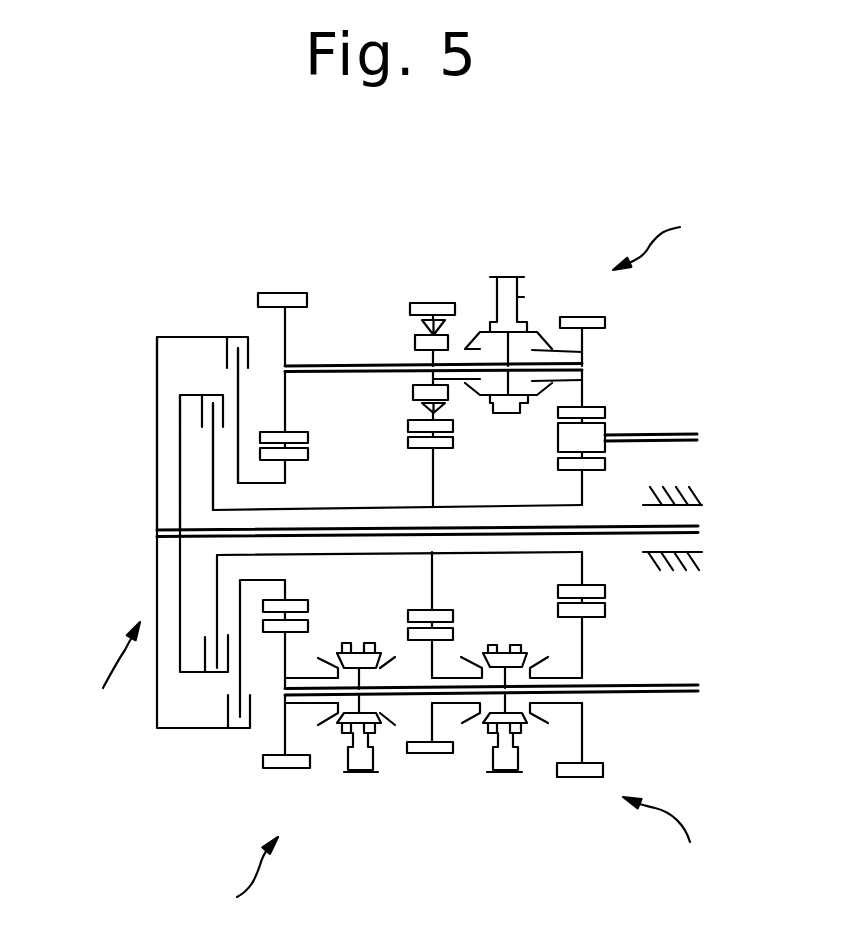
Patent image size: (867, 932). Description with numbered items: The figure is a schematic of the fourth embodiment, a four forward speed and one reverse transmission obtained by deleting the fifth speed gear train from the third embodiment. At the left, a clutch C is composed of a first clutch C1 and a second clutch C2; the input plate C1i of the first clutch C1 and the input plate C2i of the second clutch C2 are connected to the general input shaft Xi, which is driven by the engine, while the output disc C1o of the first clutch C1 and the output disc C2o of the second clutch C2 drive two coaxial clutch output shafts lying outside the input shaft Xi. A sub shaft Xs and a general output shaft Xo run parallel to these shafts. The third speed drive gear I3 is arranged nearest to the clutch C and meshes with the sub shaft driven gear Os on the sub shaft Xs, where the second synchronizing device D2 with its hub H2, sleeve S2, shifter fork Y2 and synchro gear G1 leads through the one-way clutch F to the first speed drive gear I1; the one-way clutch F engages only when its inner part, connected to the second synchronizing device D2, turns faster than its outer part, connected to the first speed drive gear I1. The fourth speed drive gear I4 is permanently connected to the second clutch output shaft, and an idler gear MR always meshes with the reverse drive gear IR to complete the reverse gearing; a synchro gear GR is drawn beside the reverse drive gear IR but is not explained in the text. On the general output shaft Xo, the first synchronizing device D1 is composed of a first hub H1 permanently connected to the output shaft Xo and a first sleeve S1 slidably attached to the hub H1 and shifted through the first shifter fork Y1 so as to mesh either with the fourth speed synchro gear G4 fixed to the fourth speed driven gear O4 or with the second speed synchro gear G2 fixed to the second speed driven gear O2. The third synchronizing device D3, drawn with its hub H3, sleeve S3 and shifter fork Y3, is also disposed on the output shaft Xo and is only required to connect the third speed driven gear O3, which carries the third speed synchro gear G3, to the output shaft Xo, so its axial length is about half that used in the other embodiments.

The clutch C is at (111, 665).
The first clutch C1 is at (218, 337).
The second clutch C2 is at (195, 395).
The input plate of the first clutch C1i is at (157, 430).
The output disc of the first clutch C1o is at (240, 445).
The input plate of the second clutch C2i is at (180, 413).
The output disc of the second clutch C2o is at (215, 473).
The sub shaft driven gear Os is at (287, 293).
The first speed drive gear I1 is at (435, 303).
The third speed drive gear I3 is at (308, 451).
The fourth speed drive gear I4 is at (447, 449).
The reverse drive gear IR is at (583, 317).
The one-way clutch F is at (417, 319).
The first speed synchro gear G1 is at (467, 346).
The carrier GR is at (537, 332).
The planetary pinion Y2 is at (523, 277).
The second synchronizing device D2 is at (668, 240).
The sub shaft Xs is at (584, 368).
The general input shaft Xi is at (693, 527).
The general output shaft Xo is at (690, 684).
The idler gear MR is at (605, 430).
The second sleeve S2 is at (495, 413).
The second hub H2 is at (508, 379).
The first sleeve S1 is at (478, 653).
The first hub H1 is at (557, 650).
The sun gear S3 is at (350, 643).
The ring gear H3 is at (382, 670).
The second speed synchro gear G2 is at (543, 718).
The third speed synchro gear G3 is at (332, 717).
The fourth speed synchro gear G4 is at (482, 718).
The first shifter fork Y1 is at (503, 773).
The planetary pinion Y3 is at (350, 770).
The second speed driven gear O2 is at (577, 777).
The third speed driven gear O3 is at (273, 768).
The fourth speed driven gear O4 is at (420, 753).
The first synchronizing device D1 is at (677, 838).
The third synchronizing device D3 is at (239, 882).